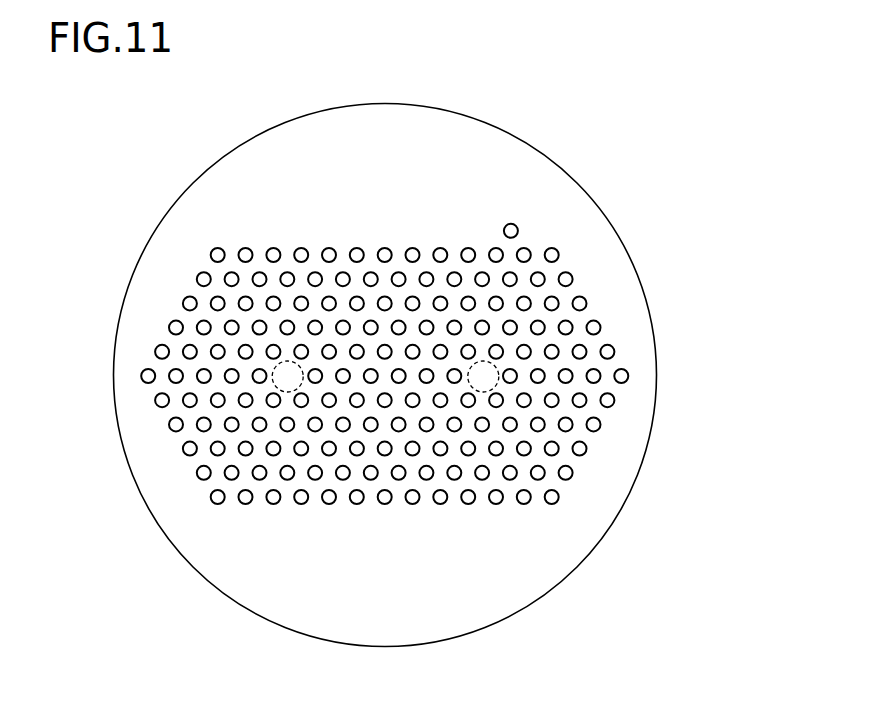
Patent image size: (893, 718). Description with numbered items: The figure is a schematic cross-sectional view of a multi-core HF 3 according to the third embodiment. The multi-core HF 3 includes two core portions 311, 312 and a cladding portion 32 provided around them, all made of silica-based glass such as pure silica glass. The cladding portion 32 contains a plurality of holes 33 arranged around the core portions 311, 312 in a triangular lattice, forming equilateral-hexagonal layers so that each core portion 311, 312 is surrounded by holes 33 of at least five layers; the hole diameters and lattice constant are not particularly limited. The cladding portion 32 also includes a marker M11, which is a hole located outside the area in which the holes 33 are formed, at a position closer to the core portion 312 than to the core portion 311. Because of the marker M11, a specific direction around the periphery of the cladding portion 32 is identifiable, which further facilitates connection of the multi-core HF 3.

The multi-core HF 3 is at (591, 147).
The cladding portion 32 is at (615, 483).
The holes 33 is at (629, 376).
The marker M11 is at (513, 216).
The core portion 311 is at (289, 361).
The core portion 312 is at (484, 361).